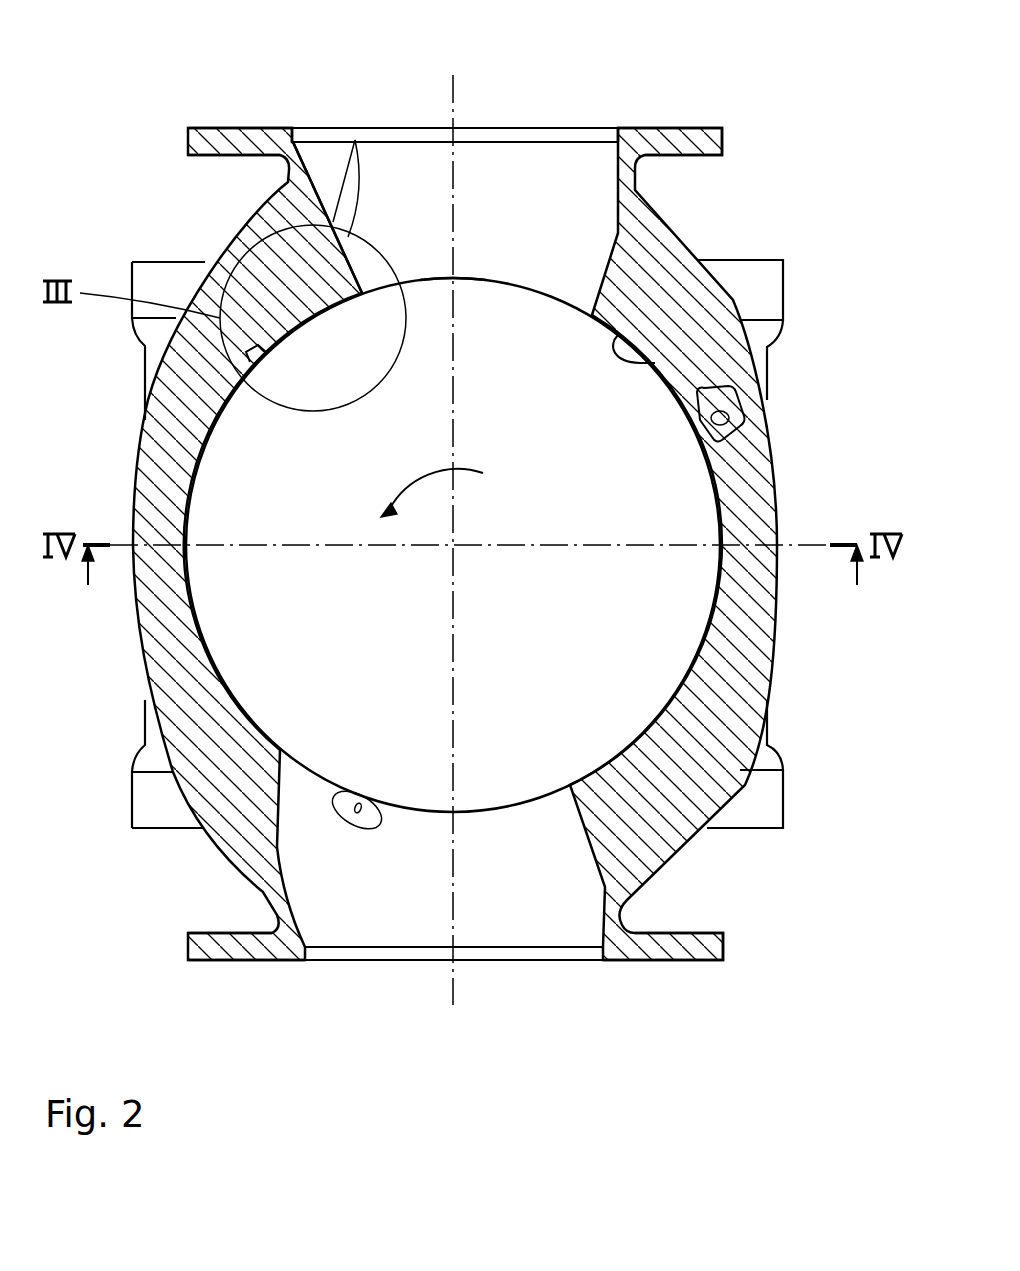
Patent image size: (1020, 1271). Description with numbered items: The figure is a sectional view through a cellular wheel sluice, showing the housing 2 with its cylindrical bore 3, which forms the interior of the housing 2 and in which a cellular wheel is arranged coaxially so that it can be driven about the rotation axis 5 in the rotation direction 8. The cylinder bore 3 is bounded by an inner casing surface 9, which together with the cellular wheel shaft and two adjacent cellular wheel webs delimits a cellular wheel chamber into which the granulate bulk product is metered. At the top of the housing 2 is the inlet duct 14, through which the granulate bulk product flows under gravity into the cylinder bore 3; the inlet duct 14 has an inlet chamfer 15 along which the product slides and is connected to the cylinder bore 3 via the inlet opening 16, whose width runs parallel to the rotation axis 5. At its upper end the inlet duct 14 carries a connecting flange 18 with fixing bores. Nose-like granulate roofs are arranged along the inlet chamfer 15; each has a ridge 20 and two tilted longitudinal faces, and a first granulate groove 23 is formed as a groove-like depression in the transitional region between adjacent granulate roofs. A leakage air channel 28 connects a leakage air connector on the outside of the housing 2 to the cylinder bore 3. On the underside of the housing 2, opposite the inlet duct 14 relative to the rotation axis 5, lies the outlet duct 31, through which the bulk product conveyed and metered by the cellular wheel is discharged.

The housing 2 is at (767, 502).
The cylindrical bore 3 is at (570, 674).
The rotation axis 5 is at (453, 545).
The rotation direction 8 is at (443, 468).
The inner casing surface 9 is at (655, 362).
The inlet duct 14 is at (566, 214).
The inlet chamfer 15 is at (308, 152).
The inlet opening 16 is at (482, 275).
The connecting flange 18 is at (667, 953).
The ridge 20 is at (355, 140).
The first granulate groove 23 is at (252, 356).
The leakage air channel 28 is at (720, 424).
The outlet duct 31 is at (543, 888).